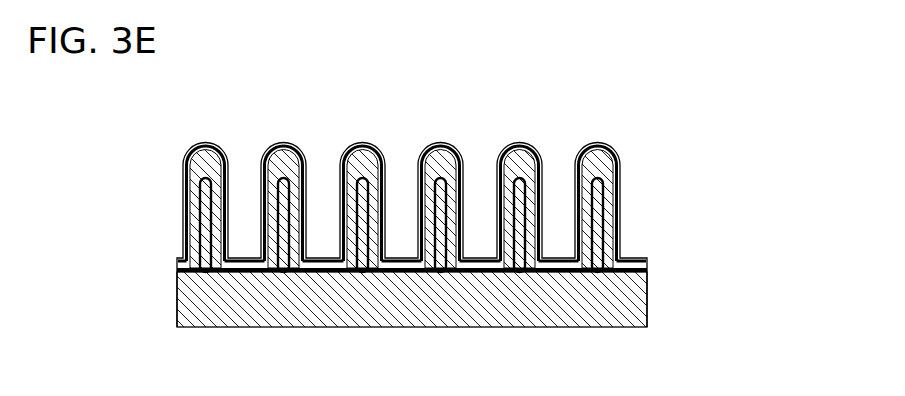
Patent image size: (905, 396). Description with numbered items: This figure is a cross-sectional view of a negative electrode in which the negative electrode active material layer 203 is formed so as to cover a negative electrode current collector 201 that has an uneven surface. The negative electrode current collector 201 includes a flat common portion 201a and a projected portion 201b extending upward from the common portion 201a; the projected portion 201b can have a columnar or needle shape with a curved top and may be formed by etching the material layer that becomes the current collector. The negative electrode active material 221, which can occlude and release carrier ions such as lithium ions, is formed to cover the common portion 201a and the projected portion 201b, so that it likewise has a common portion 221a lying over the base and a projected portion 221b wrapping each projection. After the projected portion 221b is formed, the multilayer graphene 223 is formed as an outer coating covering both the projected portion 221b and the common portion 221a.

The negative electrode current collector 201 is at (186, 322).
The common portion 201a is at (657, 276).
The projected portion 201b is at (657, 178).
The negative electrode active material layer 203 is at (83, 145).
The negative electrode active material 221 is at (203, 168).
The common portion 221a is at (168, 263).
The projected portion 221b is at (168, 152).
The multilayer graphene 223 is at (283, 152).